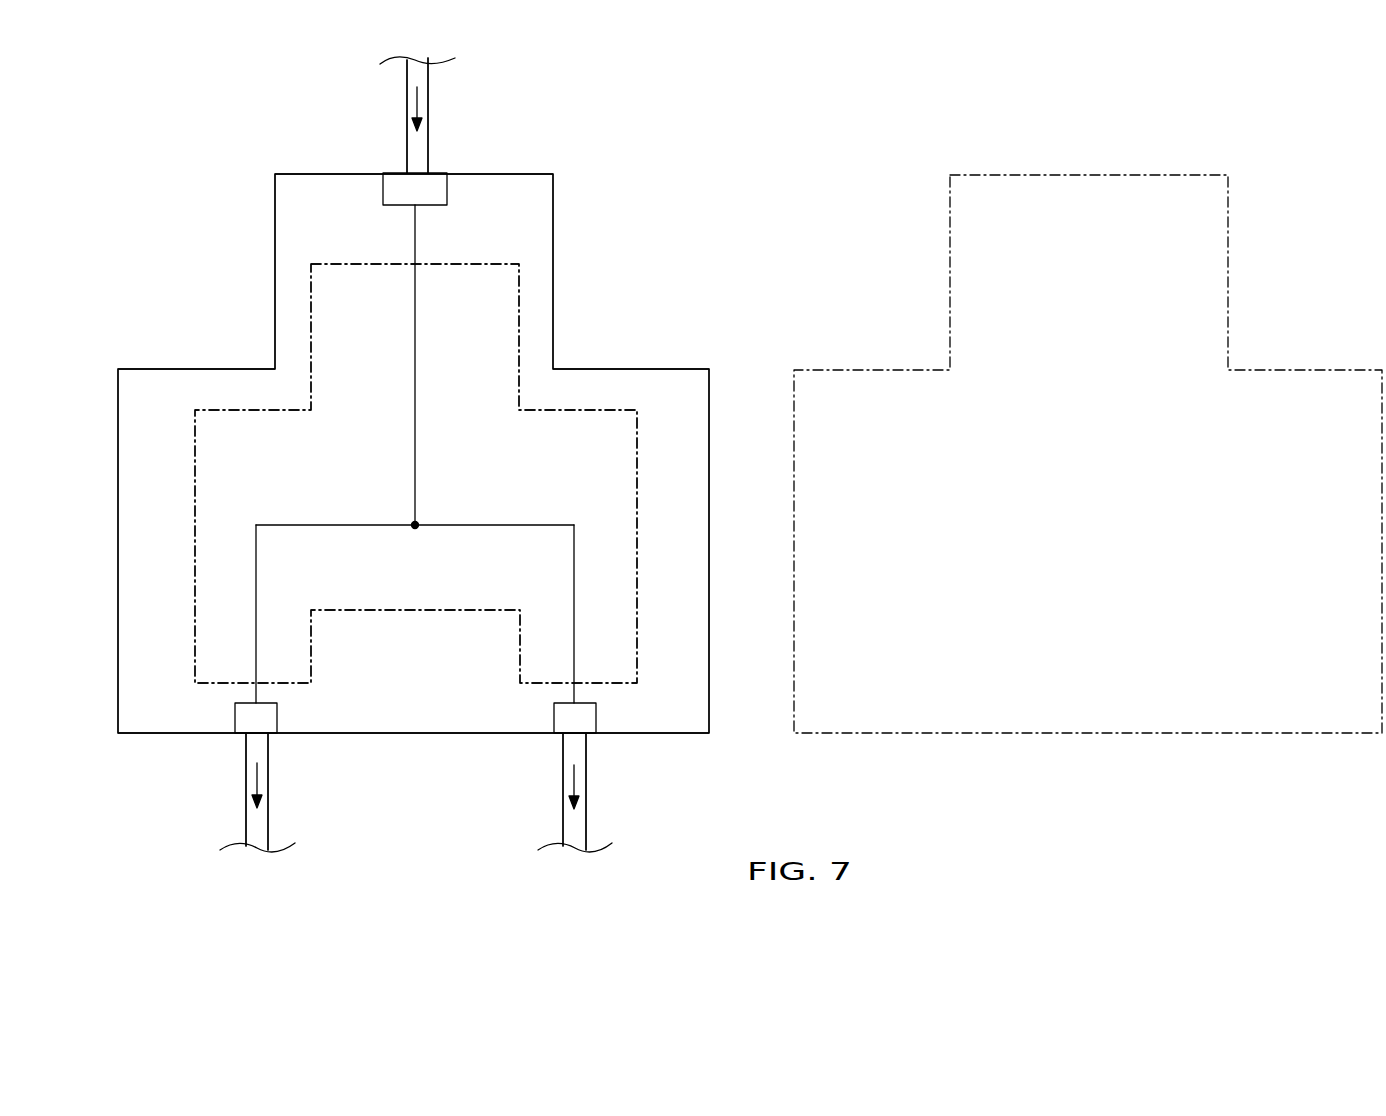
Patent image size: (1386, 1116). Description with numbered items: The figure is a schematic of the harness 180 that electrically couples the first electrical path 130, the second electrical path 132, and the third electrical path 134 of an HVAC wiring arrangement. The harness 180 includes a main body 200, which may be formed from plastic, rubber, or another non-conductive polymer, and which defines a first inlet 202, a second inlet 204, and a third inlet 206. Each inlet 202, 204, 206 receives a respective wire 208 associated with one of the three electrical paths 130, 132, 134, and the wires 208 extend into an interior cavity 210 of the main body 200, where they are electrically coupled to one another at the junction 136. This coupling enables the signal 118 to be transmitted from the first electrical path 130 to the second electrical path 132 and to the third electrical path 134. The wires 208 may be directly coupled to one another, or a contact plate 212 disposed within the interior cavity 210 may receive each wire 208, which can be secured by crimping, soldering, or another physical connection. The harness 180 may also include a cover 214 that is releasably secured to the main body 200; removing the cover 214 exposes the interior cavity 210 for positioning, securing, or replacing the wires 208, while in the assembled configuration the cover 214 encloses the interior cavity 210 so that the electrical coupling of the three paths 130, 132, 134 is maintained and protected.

The signal 118 is at (412, 100).
The first electrical path 130 is at (418, 365).
The second electrical path 132 is at (255, 612).
The third electrical path 134 is at (576, 614).
The junction 136 is at (418, 522).
The harness 180 is at (198, 368).
The main body 200 is at (106, 548).
The first inlet 202 is at (448, 196).
The second inlet 204 is at (278, 715).
The third inlet 206 is at (553, 718).
The wire 208 is at (416, 454).
The interior cavity 210 is at (648, 488).
The contact plate 212 is at (193, 668).
The cover 214 is at (1085, 735).